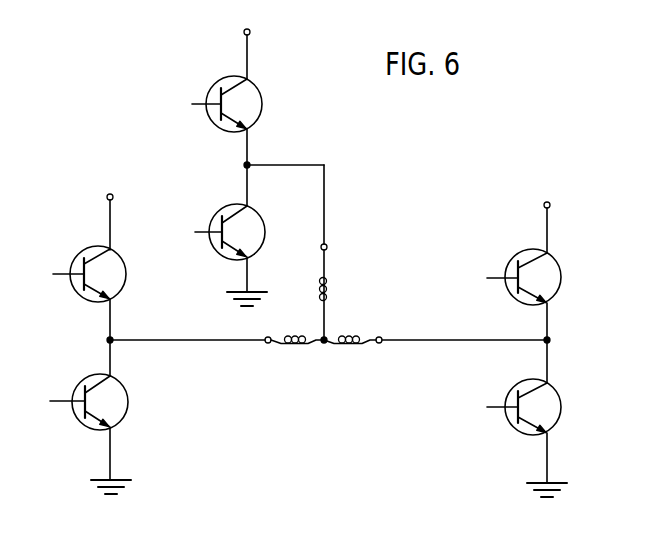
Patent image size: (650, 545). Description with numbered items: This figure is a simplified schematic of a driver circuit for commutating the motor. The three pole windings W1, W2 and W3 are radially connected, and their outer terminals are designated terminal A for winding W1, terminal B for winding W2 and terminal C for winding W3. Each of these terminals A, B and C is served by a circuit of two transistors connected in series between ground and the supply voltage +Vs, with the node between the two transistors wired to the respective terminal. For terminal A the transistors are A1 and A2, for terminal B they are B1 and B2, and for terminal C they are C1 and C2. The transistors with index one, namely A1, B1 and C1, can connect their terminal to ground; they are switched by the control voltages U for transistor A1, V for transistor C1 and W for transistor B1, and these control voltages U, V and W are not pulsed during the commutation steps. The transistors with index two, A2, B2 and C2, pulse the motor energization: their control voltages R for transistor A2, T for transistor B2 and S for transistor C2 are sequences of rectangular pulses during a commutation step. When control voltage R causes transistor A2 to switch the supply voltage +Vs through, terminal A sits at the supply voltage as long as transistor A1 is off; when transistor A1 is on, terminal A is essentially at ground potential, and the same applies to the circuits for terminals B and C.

The transistor A1 is at (127, 390).
The transistor A2 is at (126, 272).
The transistor B1 is at (561, 390).
The transistor B2 is at (561, 271).
The transistor C1 is at (265, 232).
The transistor C2 is at (262, 99).
The pole winding W1 is at (295, 347).
The pole winding W2 is at (368, 347).
The pole winding W3 is at (329, 291).
The terminal A is at (267, 330).
The terminal B is at (382, 330).
The terminal C is at (329, 244).
The control voltage R is at (60, 275).
The control voltage S is at (198, 101).
The control voltage T is at (494, 278).
The control voltage U is at (61, 400).
The control voltage V is at (201, 231).
The control voltage W is at (492, 398).
The supply voltage VS is at (327, 130).